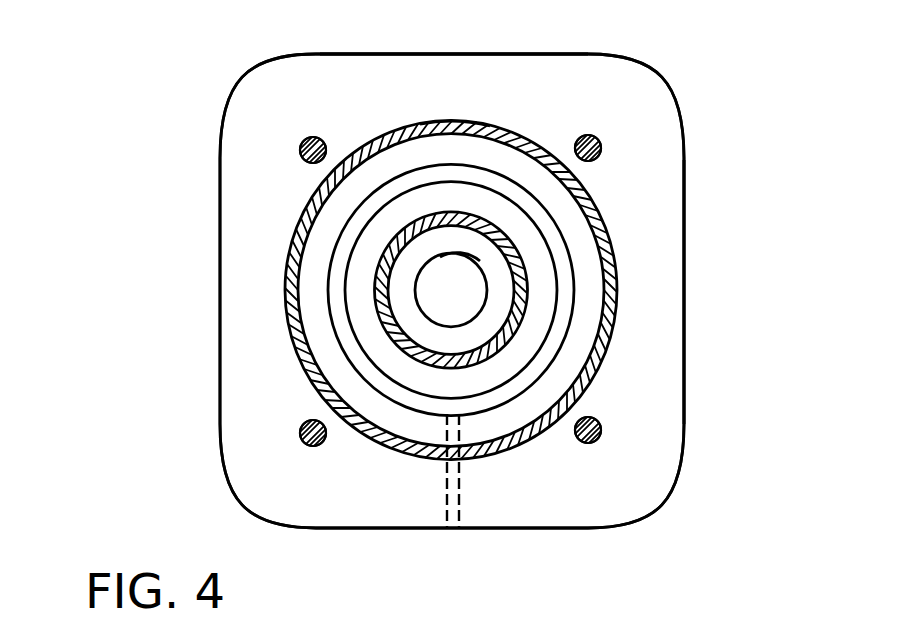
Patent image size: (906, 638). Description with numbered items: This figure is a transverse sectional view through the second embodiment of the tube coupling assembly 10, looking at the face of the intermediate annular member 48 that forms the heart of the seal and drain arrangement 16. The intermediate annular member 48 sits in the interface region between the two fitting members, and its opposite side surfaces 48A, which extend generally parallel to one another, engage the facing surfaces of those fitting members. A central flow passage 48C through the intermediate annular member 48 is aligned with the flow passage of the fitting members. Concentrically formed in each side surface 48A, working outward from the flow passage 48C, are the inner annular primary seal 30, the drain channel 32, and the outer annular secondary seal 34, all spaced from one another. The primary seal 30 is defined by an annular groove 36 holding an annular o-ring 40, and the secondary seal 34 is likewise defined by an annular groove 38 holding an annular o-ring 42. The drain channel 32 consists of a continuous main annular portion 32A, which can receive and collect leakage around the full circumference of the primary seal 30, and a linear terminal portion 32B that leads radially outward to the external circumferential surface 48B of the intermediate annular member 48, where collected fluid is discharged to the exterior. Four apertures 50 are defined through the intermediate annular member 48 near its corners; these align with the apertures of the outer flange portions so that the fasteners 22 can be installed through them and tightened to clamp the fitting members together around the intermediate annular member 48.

The tube coupling assembly 10 is at (699, 73).
The seal and drain arrangement 16 is at (624, 223).
The fasteners 22 is at (312, 137).
The inner annular primary seal 30 is at (537, 281).
The drain channel 32 is at (331, 226).
The main annular portion 32A is at (337, 284).
The linear terminal portion 32B is at (459, 480).
The outer annular secondary seal 34 is at (292, 360).
The annular groove 36 is at (513, 311).
The annular groove 38 is at (457, 122).
The annular o-ring 40 is at (385, 326).
The annular o-ring 42 is at (416, 124).
The intermediate annular member 48 is at (684, 372).
The side surfaces 48A is at (542, 96).
The external circumferential surface 48B is at (377, 55).
The flow passage 48C is at (453, 257).
The apertures 50 is at (300, 155).